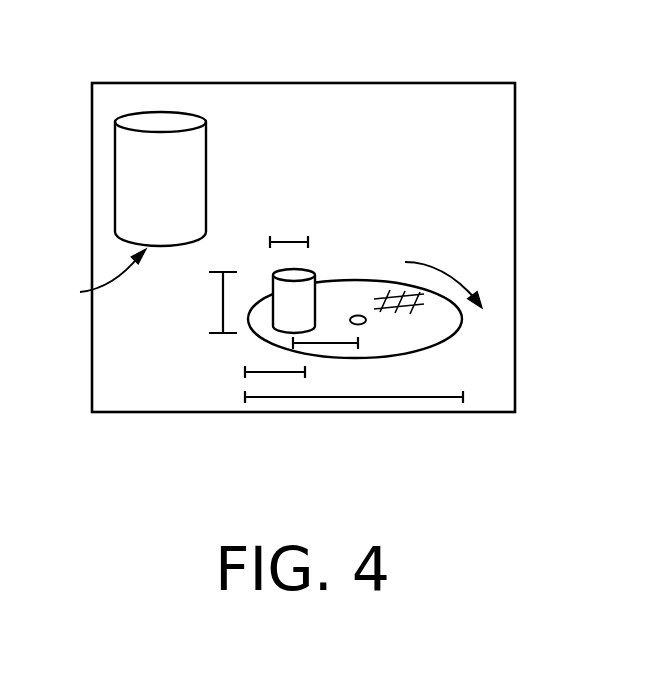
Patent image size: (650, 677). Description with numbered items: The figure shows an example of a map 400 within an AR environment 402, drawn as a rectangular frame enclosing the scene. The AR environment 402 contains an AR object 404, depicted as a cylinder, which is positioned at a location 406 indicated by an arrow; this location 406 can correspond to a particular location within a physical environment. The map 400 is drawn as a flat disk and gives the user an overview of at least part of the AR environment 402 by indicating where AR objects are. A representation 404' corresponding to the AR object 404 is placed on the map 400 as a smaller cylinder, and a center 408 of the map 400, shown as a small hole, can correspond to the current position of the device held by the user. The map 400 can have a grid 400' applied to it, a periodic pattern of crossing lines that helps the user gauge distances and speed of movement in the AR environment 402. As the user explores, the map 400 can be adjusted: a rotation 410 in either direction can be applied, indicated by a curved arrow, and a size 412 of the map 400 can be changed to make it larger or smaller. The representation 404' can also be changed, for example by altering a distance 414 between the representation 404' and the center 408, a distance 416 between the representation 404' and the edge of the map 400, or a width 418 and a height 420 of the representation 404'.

The AR environment 402 is at (347, 83).
The AR object 404 is at (203, 179).
The location 406 is at (89, 276).
The representation 404' is at (322, 276).
The map 400 is at (420, 322).
The grid 400' is at (478, 306).
The center 408 is at (368, 322).
The rotation 410 is at (435, 262).
The size 412 is at (400, 397).
The distance 414 is at (333, 345).
The distance 416 is at (265, 372).
The width 418 is at (290, 240).
The height 420 is at (222, 300).